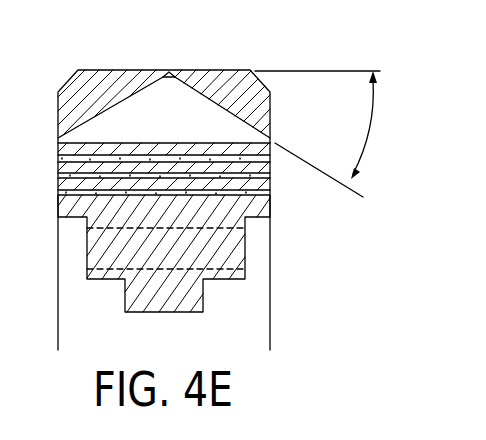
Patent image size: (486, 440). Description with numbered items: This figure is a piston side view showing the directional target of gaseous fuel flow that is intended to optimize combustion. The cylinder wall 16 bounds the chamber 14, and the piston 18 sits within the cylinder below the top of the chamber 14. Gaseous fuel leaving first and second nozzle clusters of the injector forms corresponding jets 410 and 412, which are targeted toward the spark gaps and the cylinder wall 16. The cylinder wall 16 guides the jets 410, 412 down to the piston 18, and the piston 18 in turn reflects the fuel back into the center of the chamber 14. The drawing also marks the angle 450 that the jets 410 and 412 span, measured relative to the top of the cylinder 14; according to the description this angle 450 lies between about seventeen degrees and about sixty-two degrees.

The chamber 14 is at (177, 125).
The cylinder wall 16 is at (270, 327).
The piston 18 is at (230, 243).
The fuel jet 410 is at (230, 70).
The fuel jet 412 is at (100, 70).
The angle 450 is at (375, 131).